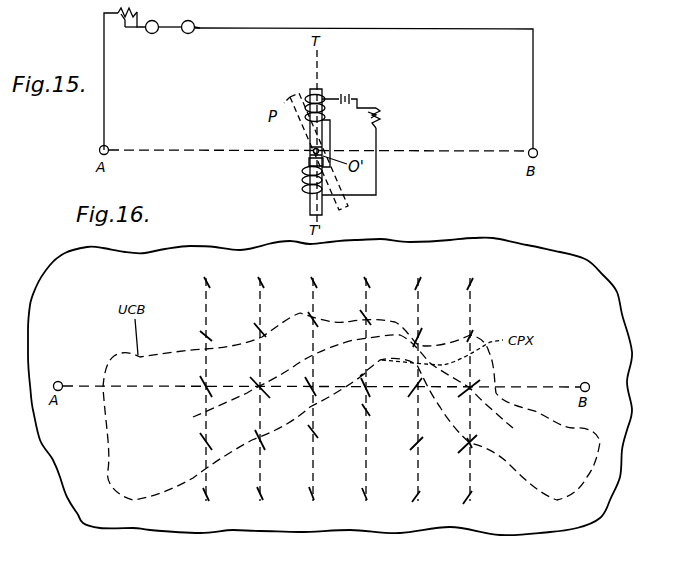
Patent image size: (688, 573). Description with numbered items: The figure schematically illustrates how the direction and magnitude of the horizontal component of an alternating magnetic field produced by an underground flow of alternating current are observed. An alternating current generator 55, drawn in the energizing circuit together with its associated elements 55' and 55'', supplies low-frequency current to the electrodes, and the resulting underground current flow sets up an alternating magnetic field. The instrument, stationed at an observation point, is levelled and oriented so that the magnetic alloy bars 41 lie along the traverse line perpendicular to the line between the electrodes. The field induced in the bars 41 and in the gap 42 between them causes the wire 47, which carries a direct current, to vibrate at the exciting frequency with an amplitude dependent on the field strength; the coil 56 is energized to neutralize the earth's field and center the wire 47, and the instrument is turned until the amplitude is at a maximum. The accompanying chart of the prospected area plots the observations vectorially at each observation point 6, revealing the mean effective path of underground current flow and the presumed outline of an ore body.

In FIG. 15, the resistor 55' is at (132, 36).
In FIG. 15, the alternating current generator 55 is at (167, 44).
In FIG. 15, the ammeter 55'' is at (213, 19).
In FIG. 15, the magnetic alloy bars 41 is at (322, 91).
In FIG. 15, the gap 42 is at (312, 151).
In FIG. 15, the wire 47 is at (312, 156).
In FIG. 15, the coil 56 is at (302, 186).
In FIG. 16, the observation stations 6 is at (207, 495).